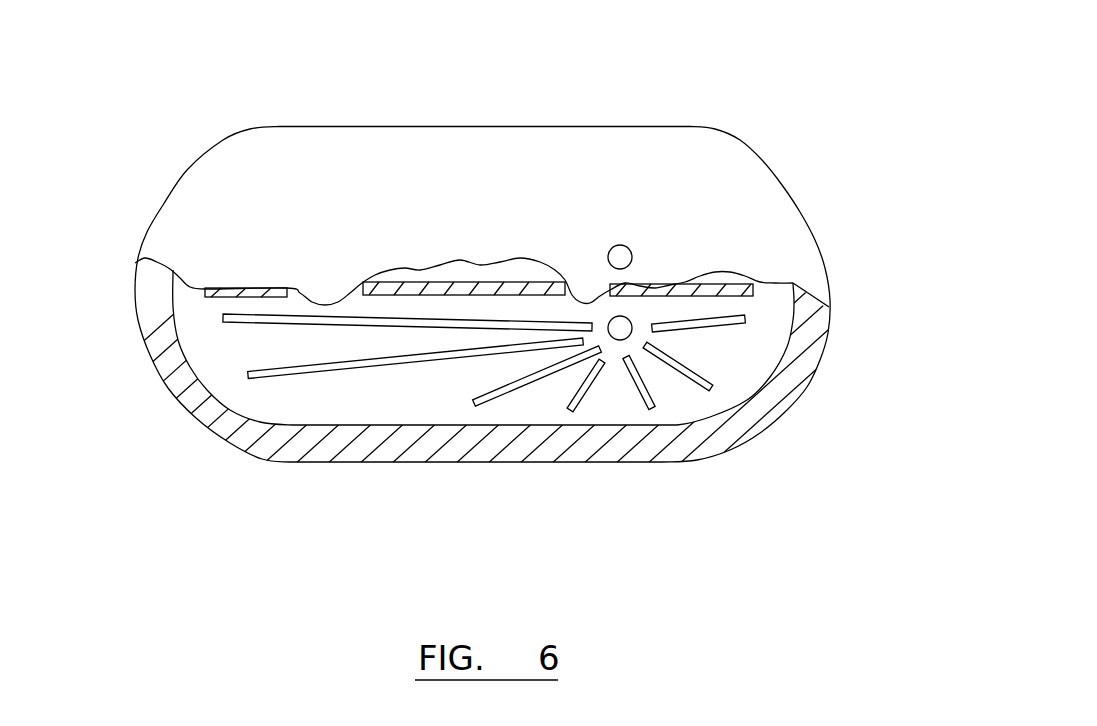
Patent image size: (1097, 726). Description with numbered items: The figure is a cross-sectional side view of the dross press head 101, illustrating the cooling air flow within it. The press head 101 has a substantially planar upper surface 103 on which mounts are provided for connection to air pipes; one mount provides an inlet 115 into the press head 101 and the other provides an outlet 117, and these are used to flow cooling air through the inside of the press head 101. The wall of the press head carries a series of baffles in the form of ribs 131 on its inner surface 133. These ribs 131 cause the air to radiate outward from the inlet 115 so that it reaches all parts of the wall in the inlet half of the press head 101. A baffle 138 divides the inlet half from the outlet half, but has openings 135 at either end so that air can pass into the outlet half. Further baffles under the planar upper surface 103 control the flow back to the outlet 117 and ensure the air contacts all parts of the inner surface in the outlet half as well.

The press head 101 is at (720, 127).
The upper surface 103 is at (387, 183).
The inlet 115 is at (622, 326).
The outlet 117 is at (620, 255).
The ribs 131 is at (500, 392).
The inner surface 133 is at (473, 287).
The openings 135 is at (773, 290).
The baffle 138 is at (235, 345).